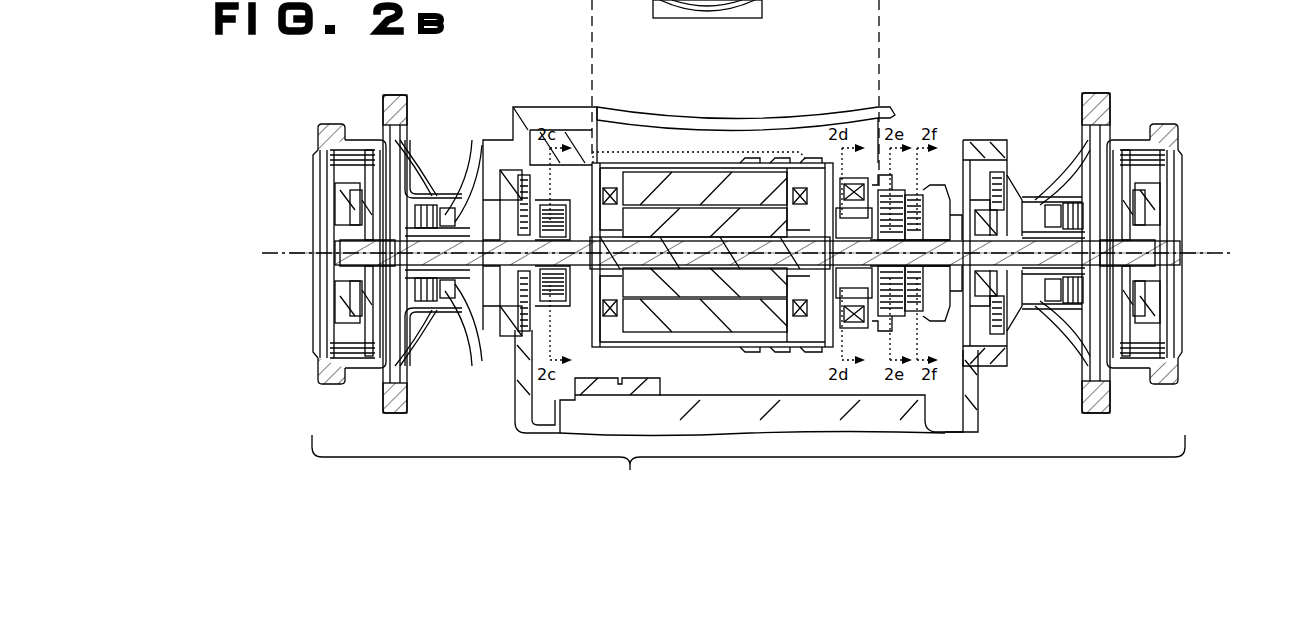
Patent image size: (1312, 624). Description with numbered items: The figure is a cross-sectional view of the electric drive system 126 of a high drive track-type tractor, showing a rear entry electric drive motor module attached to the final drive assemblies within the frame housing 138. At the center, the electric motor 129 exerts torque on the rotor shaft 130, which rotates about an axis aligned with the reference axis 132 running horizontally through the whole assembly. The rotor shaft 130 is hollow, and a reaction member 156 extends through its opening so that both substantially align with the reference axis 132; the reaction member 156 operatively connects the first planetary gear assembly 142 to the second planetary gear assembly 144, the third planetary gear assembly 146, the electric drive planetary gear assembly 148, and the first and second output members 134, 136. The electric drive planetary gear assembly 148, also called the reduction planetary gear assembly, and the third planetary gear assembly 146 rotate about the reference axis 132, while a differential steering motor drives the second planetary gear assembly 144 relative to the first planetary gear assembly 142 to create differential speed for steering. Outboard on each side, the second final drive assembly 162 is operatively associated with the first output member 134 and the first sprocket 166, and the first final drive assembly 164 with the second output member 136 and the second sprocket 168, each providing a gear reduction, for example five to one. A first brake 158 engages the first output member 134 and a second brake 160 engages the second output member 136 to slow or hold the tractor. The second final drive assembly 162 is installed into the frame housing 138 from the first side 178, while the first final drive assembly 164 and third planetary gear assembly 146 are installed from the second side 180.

The electric drive system 126 is at (748, 465).
The electric motor 129 is at (714, 160).
The rotor shaft 130 is at (745, 270).
The reference axis 132 is at (290, 255).
The first output member 134 is at (1080, 305).
The second output member 136 is at (467, 325).
The frame housing 138 is at (515, 128).
The first planetary gear assembly 142 is at (897, 175).
The second planetary gear assembly 144 is at (927, 330).
The third planetary gear assembly 146 is at (577, 180).
The electric drive planetary gear assembly 148 is at (862, 170).
The reaction member 156 is at (696, 262).
The first brake 158 is at (1000, 345).
The second brake 160 is at (530, 345).
The second final drive assembly 162 is at (1146, 122).
The first final drive assembly 164 is at (337, 124).
The first sprocket 166 is at (1097, 93).
The second sprocket 168 is at (405, 104).
The first side 178 is at (1188, 198).
The second side 180 is at (311, 225).